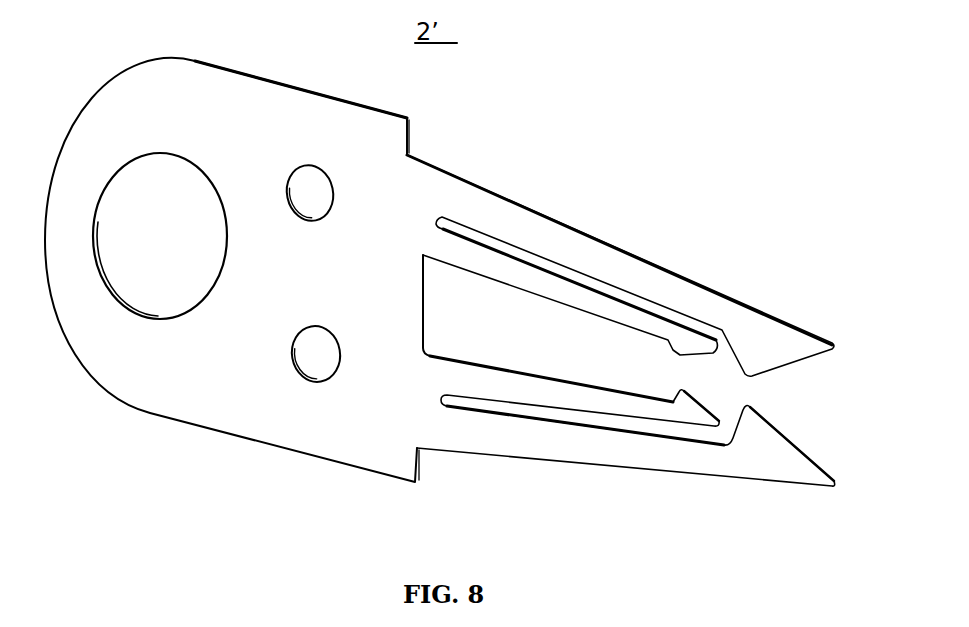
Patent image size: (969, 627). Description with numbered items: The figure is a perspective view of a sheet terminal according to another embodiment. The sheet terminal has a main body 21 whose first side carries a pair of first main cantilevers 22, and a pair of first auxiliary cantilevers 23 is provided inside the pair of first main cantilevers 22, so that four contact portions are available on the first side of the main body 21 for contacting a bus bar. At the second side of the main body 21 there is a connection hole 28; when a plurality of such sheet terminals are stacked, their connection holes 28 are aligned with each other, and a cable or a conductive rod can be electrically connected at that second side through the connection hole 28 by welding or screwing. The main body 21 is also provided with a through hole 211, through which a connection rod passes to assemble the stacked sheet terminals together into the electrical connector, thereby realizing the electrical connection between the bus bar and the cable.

The main body 21 is at (353, 388).
The through hole 211 is at (310, 347).
The first main cantilevers 22 is at (688, 296).
The first auxiliary cantilevers 23 is at (570, 390).
The connection hole 28 is at (158, 273).